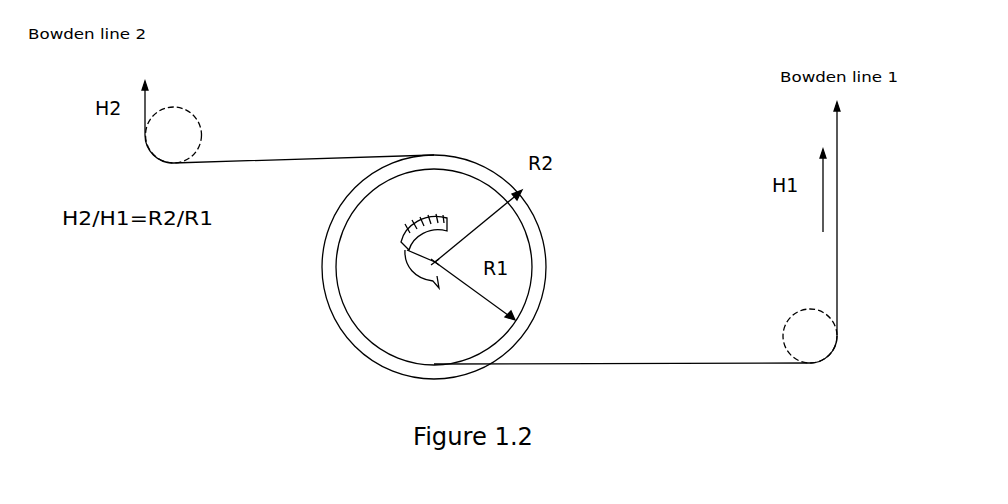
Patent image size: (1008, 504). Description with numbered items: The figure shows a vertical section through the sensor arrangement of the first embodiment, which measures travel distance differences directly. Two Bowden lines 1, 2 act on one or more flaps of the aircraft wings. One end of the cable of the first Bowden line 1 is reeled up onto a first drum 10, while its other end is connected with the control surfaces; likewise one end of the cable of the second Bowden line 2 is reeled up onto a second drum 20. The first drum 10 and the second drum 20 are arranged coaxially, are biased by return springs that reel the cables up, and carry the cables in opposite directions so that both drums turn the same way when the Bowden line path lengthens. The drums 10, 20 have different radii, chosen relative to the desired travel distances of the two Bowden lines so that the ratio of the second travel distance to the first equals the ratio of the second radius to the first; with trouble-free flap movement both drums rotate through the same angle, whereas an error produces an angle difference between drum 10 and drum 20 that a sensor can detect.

The Bowden line 1 is at (722, 368).
The second Bowden line 2 is at (271, 156).
The first drum 10 is at (372, 279).
The second drum 20 is at (345, 332).